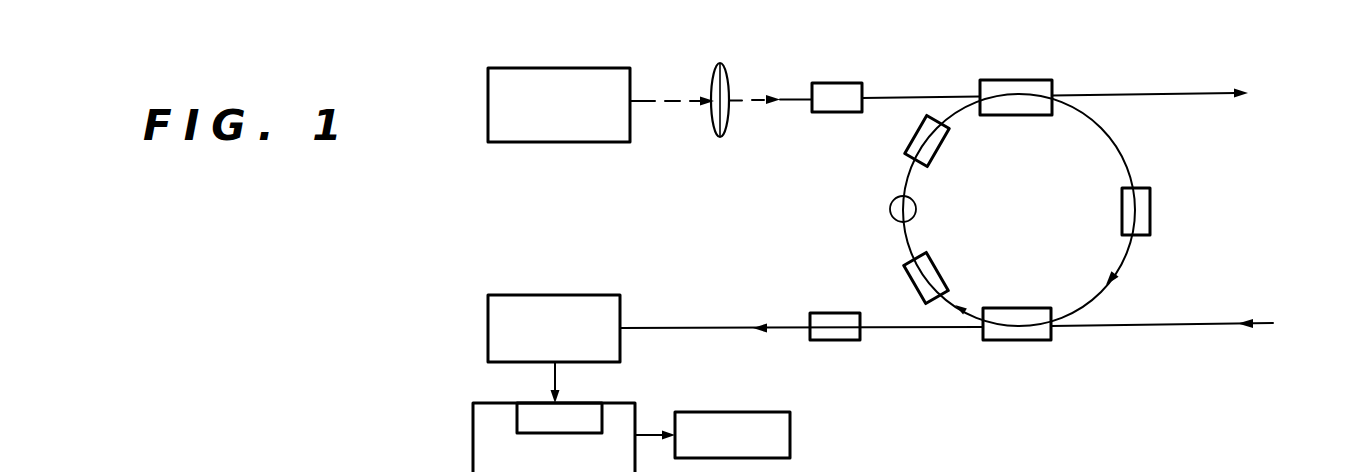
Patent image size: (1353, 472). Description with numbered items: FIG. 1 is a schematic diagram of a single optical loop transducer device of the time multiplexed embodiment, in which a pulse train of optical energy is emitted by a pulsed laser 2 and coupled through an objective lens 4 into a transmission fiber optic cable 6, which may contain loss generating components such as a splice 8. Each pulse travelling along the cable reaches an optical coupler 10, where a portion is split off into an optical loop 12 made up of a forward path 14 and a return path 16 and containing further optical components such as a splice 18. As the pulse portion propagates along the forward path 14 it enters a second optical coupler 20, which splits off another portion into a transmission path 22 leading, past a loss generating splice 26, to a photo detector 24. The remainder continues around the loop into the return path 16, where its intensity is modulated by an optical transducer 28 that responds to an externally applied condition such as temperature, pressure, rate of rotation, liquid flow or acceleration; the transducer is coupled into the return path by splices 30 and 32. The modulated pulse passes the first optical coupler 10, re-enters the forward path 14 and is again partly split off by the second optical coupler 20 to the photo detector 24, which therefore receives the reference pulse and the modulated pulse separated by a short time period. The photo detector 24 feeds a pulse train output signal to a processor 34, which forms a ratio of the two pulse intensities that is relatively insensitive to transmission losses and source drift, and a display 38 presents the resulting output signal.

The pulsed laser 2 is at (488, 74).
The objective lens 4 is at (725, 72).
The transmission fiber optic cable 6 is at (787, 93).
The splice 8 is at (832, 90).
The optical coupler 10 is at (1040, 58).
The optical loop 12 is at (1150, 262).
The forward path 14 is at (1107, 128).
The return path 16 is at (962, 307).
The splice 18 is at (1150, 190).
The second optical coupler 20 is at (1000, 340).
The transmission path 22 is at (735, 325).
The photo detector 24 is at (565, 293).
The splice 26 is at (830, 340).
The optical transducer 28 is at (917, 207).
The splice 30 is at (905, 267).
The splice 32 is at (900, 154).
The processor 34 is at (474, 403).
The display 38 is at (745, 385).